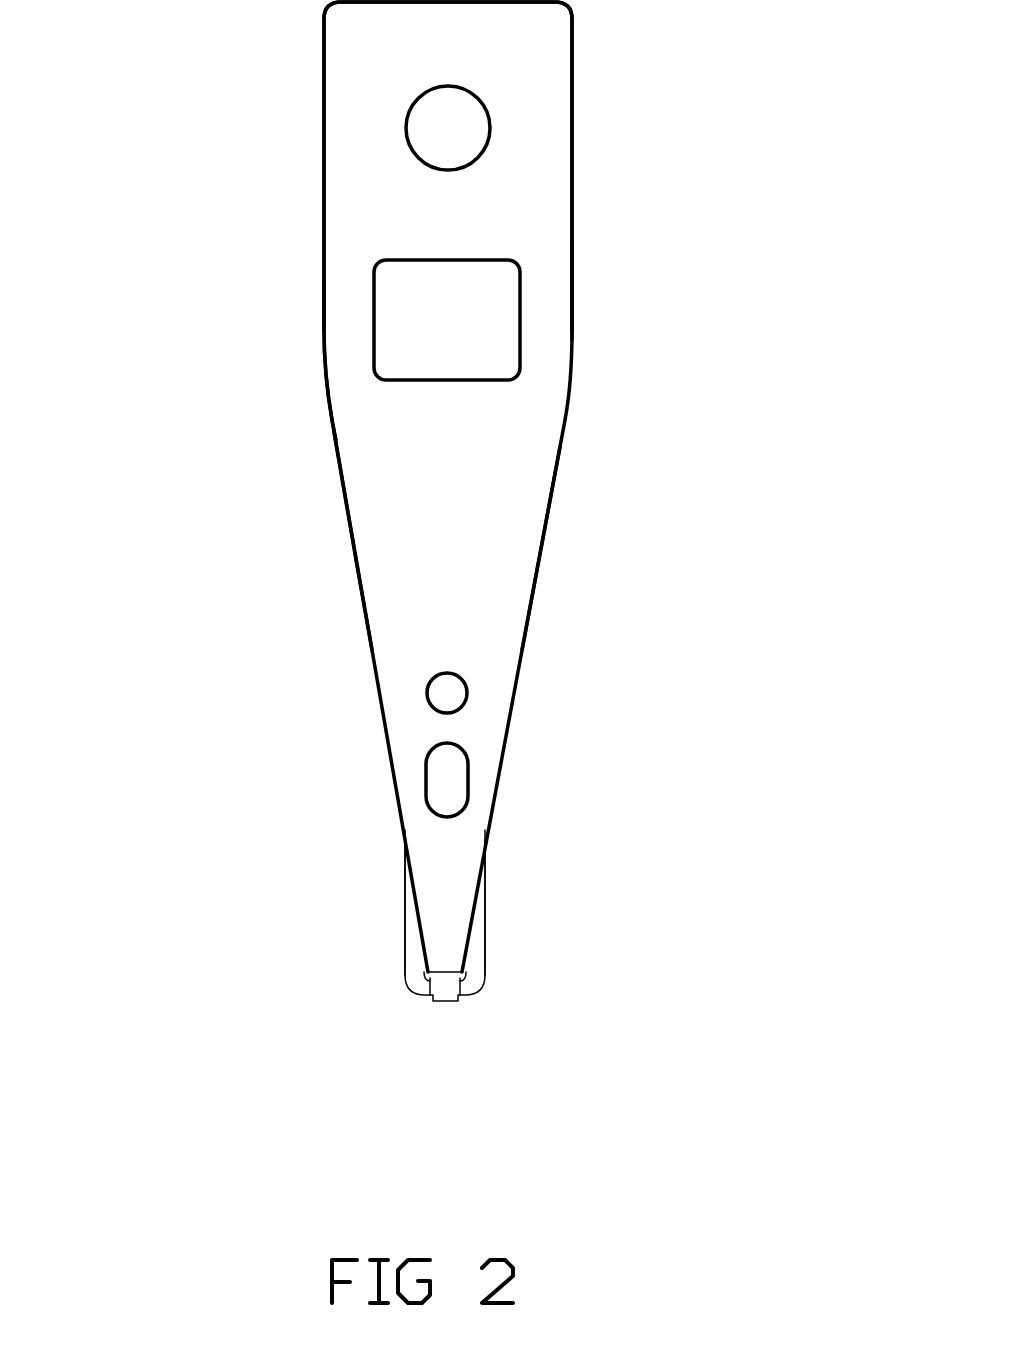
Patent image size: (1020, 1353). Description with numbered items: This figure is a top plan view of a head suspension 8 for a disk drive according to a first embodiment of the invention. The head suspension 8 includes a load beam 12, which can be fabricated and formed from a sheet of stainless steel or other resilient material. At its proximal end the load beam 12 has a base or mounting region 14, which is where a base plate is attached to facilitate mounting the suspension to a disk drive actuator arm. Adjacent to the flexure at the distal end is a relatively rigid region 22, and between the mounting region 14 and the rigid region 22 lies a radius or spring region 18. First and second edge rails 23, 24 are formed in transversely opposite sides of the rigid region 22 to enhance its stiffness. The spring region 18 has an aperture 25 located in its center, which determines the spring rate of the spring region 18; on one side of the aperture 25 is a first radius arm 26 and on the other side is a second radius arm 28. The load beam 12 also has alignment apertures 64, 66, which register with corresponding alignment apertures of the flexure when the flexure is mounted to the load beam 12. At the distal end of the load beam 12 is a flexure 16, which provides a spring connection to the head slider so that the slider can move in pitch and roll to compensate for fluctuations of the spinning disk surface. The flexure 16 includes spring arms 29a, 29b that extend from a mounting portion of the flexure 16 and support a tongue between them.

The head suspension 8 is at (683, 218).
The mounting region 14 is at (572, 57).
The first radius arm 26 is at (572, 274).
The spring region 18 is at (572, 315).
The aperture 25 is at (377, 290).
The second radius arm 28 is at (324, 306).
The load beam 12 is at (322, 412).
The rigid region 22 is at (345, 508).
The second edge rail 24 is at (358, 595).
The first edge rail 23 is at (545, 543).
The alignment aperture 66 is at (430, 687).
The alignment aperture 64 is at (458, 775).
The flexure 16 is at (490, 887).
The spring arm 29a is at (487, 948).
The spring arm 29b is at (405, 948).